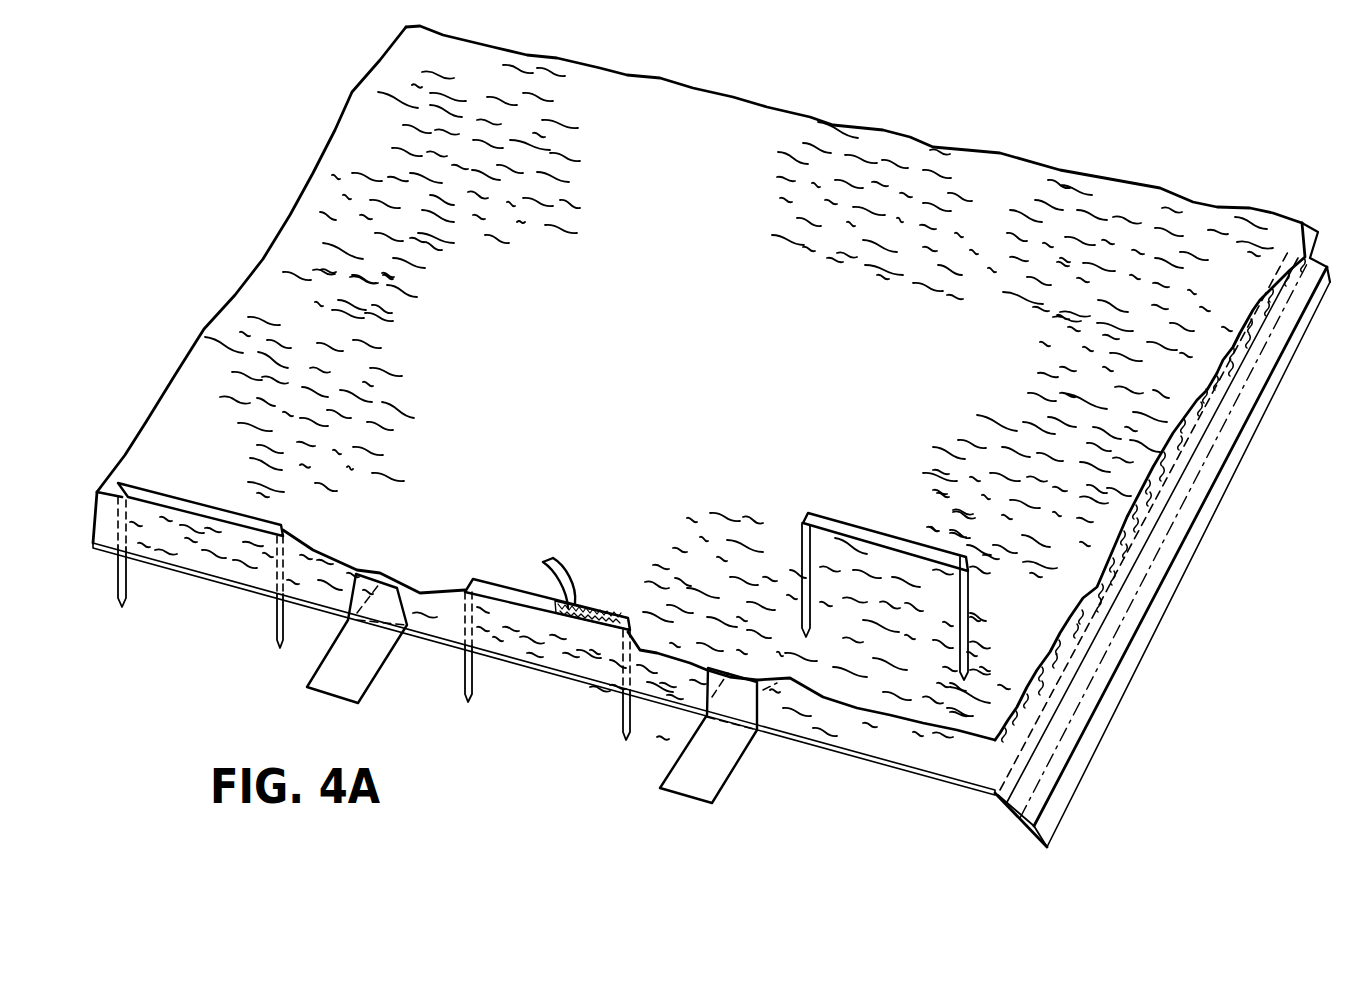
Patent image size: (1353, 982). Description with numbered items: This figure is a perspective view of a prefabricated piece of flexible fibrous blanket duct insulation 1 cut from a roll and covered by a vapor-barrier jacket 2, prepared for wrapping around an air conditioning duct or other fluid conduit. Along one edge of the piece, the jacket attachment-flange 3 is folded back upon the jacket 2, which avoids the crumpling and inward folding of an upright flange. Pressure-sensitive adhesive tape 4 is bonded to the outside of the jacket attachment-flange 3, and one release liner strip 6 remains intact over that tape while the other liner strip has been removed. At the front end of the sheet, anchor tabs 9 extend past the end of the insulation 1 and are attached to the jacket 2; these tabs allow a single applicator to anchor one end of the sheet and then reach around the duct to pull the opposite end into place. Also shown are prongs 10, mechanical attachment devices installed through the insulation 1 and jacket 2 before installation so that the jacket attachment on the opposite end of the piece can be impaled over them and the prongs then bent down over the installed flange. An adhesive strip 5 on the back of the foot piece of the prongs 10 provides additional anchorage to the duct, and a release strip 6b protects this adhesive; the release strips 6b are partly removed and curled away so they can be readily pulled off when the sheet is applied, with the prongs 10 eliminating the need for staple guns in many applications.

The insulation material 1 is at (587, 665).
The jacket 2 is at (872, 762).
The jacket attachment-flange 3 is at (1155, 563).
The pressure-sensitive adhesive tape 4 is at (998, 797).
The adhesive strip 5 is at (585, 610).
The release liner strip 6 is at (1073, 767).
The release strip 6b is at (557, 560).
The anchor tabs 9 is at (383, 660).
The prongs 10 is at (283, 527).